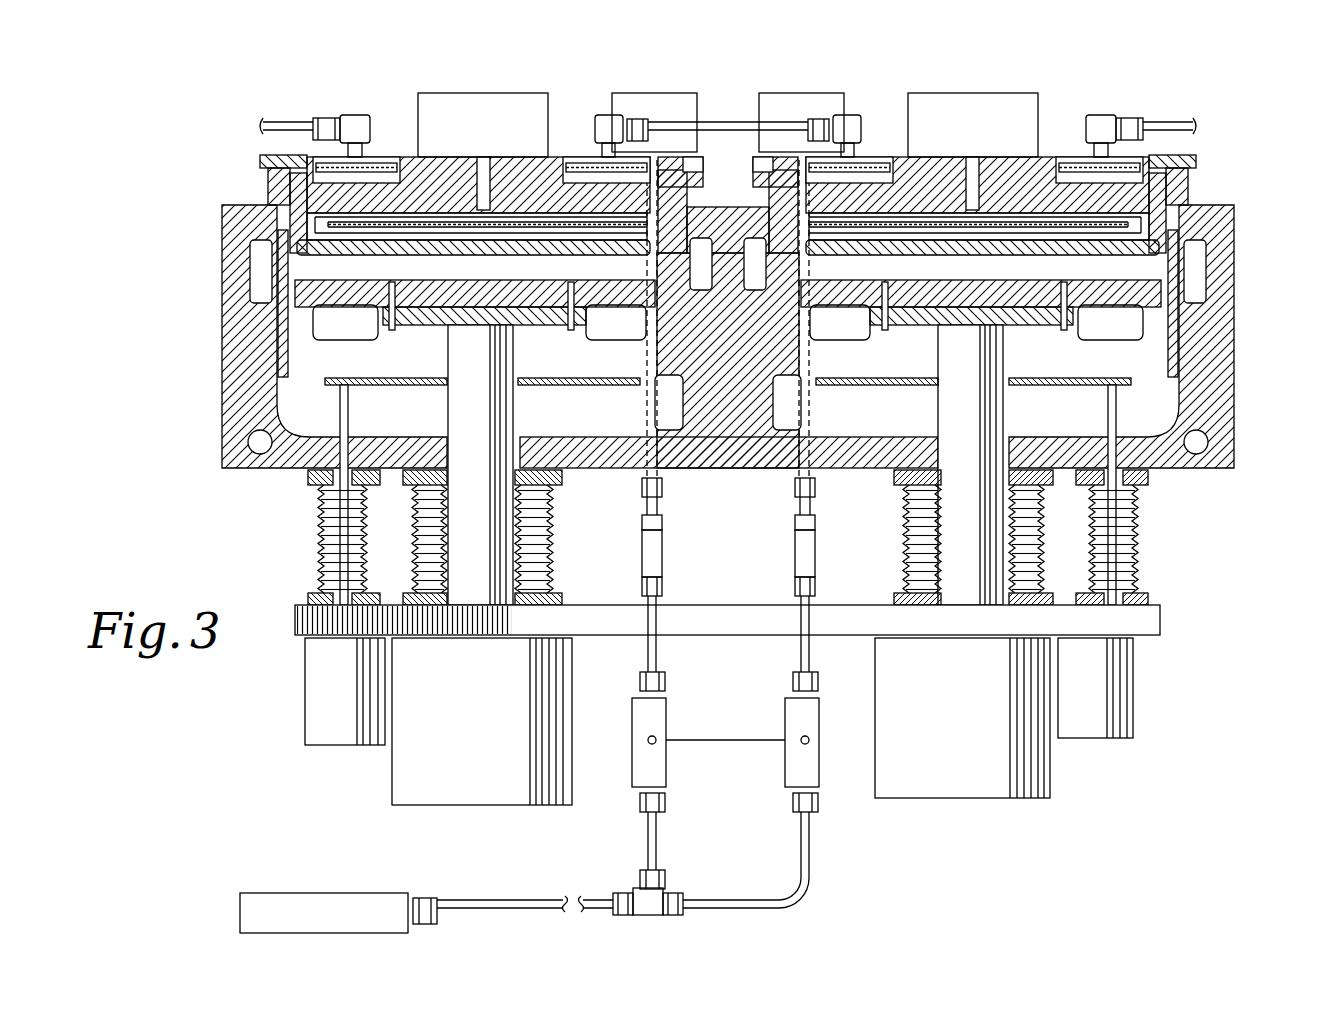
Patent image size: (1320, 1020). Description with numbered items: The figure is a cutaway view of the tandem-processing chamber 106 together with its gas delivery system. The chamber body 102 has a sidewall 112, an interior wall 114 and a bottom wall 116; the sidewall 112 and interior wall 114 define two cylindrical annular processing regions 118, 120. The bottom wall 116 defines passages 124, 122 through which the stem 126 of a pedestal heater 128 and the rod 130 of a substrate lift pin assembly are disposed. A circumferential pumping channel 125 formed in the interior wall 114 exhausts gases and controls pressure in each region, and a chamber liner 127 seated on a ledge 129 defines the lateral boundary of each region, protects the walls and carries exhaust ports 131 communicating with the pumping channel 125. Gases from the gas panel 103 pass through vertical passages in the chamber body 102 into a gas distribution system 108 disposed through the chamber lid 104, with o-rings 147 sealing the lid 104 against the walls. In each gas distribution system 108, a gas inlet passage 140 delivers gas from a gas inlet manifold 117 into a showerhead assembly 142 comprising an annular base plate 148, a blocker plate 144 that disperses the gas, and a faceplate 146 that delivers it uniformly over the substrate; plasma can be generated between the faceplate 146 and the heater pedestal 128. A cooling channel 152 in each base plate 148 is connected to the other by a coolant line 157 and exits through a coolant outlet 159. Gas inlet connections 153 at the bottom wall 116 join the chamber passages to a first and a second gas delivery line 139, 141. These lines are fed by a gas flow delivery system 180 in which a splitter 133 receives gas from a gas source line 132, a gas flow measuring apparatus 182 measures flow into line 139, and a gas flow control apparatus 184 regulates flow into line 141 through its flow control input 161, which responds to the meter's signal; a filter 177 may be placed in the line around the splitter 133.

The chamber body 102 is at (222, 378).
The gas panel 103 is at (323, 893).
The chamber lid 104 is at (262, 158).
The tandem-processing chamber 106 is at (160, 282).
The gas distribution system 108 is at (729, 164).
The sidewall 112 is at (1235, 392).
The interior wall 114 is at (778, 405).
The bottom wall 116 is at (580, 475).
The gas inlet manifold 117 is at (485, 92).
The processing region 118 is at (302, 422).
The processing region 120 is at (1145, 412).
The passage 122 is at (353, 436).
The passage 124 is at (405, 473).
The circumferential pumping channel 125 is at (665, 312).
The stem 126 is at (517, 408).
The chamber liner 127 is at (660, 357).
The pedestal heater 128 is at (447, 285).
The ledge 129 is at (660, 372).
The rod 130 is at (350, 398).
The exhaust ports 131 is at (660, 267).
The gas source line 132 is at (550, 903).
The splitter 133 is at (666, 892).
The first gas delivery line 139 is at (648, 625).
The gas inlet passage 140 is at (484, 175).
The second gas delivery line 141 is at (810, 622).
The showerhead assembly 142 is at (312, 238).
The blocker plate 144 is at (525, 220).
The faceplate 146 is at (380, 235).
The o-rings 147 is at (1195, 172).
The annular base plate 148 is at (575, 185).
The cooling channel 152 is at (382, 173).
The gas inlet connections 153 is at (795, 487).
The coolant line 157 is at (713, 122).
The coolant outlet 159 is at (1170, 120).
The flow control input 161 is at (810, 742).
The filter 177 is at (642, 555).
The gas flow delivery system 180 is at (564, 704).
The gas flow measuring apparatus 182 is at (666, 716).
The gas flow control apparatus 184 is at (785, 773).